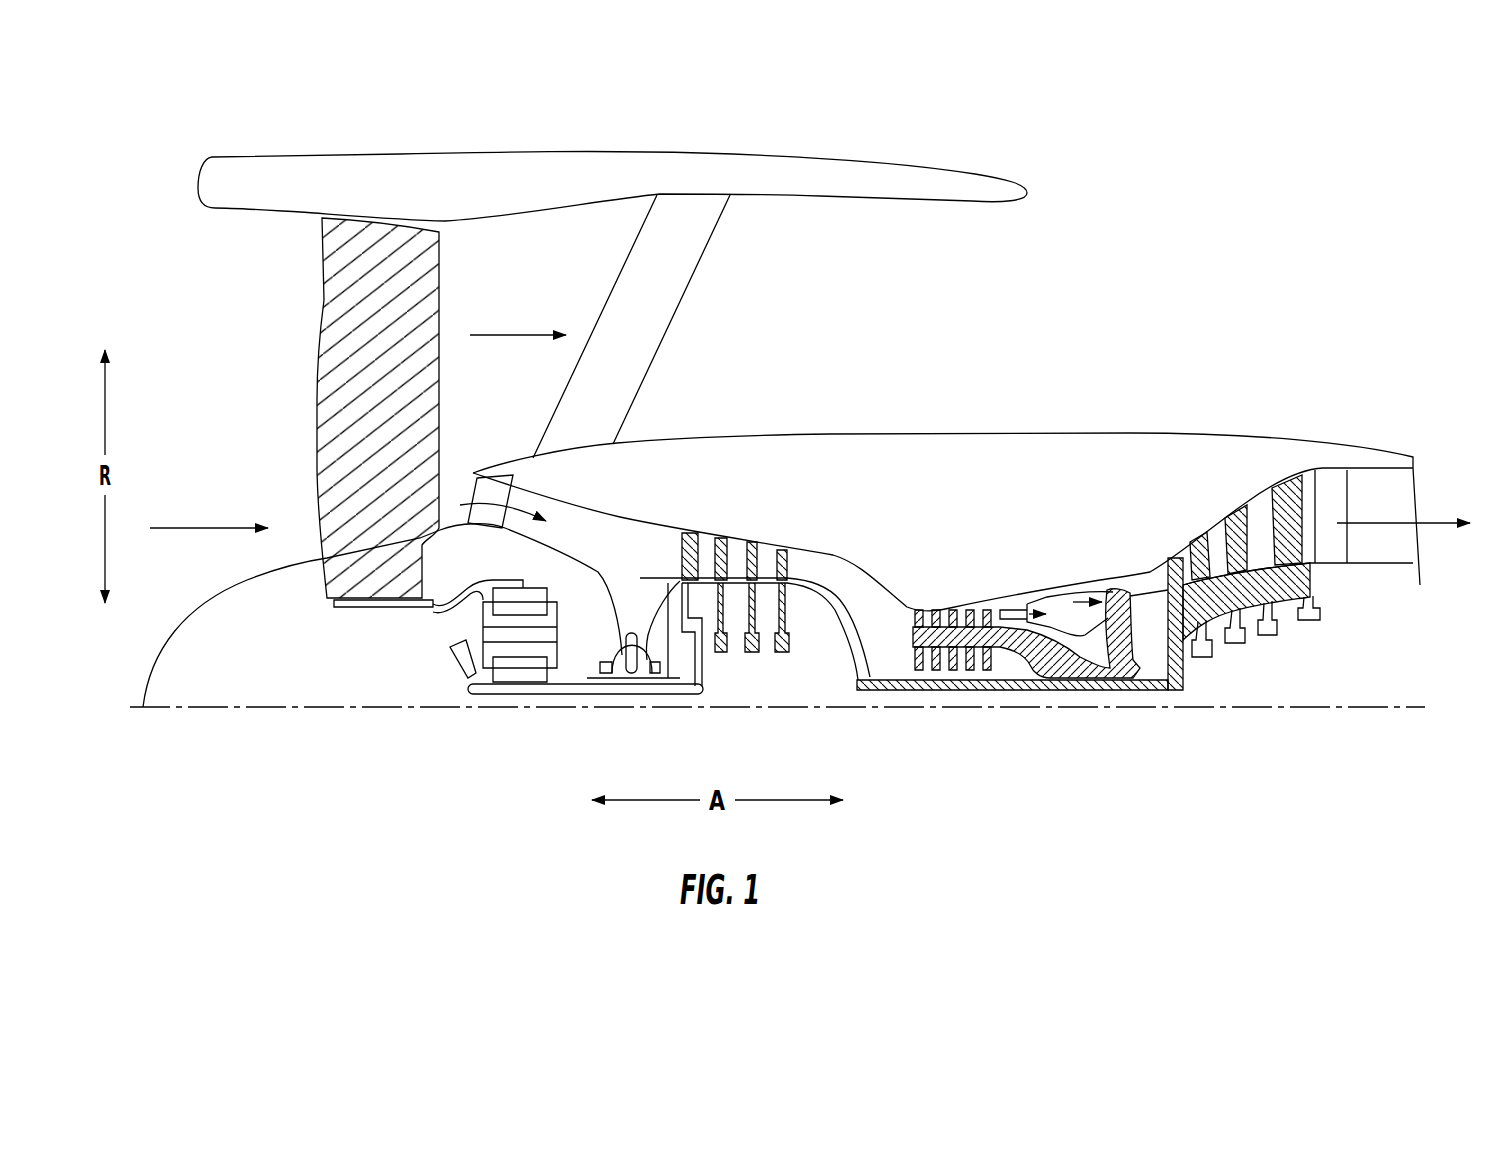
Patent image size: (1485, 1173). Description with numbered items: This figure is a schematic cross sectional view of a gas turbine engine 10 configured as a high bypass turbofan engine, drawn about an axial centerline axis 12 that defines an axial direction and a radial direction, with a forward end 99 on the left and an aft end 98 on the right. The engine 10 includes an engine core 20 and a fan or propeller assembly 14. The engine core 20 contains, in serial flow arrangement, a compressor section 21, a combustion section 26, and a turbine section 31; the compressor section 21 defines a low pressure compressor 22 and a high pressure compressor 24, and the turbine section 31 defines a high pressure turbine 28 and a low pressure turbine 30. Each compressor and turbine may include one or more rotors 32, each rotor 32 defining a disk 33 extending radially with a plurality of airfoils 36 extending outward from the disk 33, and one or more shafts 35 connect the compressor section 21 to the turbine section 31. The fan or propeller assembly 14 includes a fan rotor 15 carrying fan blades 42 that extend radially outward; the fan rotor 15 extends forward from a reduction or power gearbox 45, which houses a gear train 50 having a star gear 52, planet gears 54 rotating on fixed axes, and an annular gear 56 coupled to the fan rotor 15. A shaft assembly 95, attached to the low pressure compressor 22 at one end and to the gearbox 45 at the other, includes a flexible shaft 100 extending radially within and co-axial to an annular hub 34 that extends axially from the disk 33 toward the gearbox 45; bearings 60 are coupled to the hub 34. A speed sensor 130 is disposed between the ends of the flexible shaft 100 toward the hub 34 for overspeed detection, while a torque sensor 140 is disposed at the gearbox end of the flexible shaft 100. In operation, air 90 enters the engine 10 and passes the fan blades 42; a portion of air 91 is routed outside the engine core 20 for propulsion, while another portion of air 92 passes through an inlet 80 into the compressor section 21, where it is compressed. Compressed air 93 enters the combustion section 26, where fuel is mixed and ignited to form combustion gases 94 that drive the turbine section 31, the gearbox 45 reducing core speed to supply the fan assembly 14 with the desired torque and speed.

The gas turbine engine 10 is at (1148, 239).
The axial centerline axis 12 is at (268, 708).
The fan or propeller assembly 14 is at (382, 462).
The fan rotor 15 is at (433, 607).
The engine core 20 is at (877, 467).
The compressor section 21 is at (941, 529).
The low pressure compressor 22 is at (726, 587).
The high pressure compressor 24 is at (958, 602).
The combustion section 26 is at (1235, 557).
The high pressure turbine 28 is at (1114, 596).
The low pressure turbine 30 is at (1244, 563).
The turbine section 31 is at (1241, 485).
The rotor 32 is at (781, 652).
The disk 33 is at (724, 652).
The annular hub 34 is at (639, 685).
The shaft 35 is at (1108, 654).
The airfoils 36 is at (690, 534).
The fan or propeller blades 42 is at (330, 318).
The reduction or power gearbox 45 is at (548, 621).
The gear train 50 is at (508, 608).
The star gear 52 is at (537, 680).
The planet gears 54 is at (530, 592).
The annular gear 56 is at (512, 582).
The bearings 60 is at (612, 662).
The inlet 80 is at (465, 481).
The air 90 is at (177, 528).
The air 91 is at (505, 333).
The air 92 is at (510, 503).
The compressed air 93 is at (1022, 607).
The combustion gases 94 is at (1073, 600).
The shaft assembly 95 is at (437, 713).
The aft end 98 is at (1436, 648).
The forward end 99 is at (96, 648).
The flexible shaft 100 is at (584, 690).
The speed sensor 130 is at (639, 633).
The torque sensor 140 is at (457, 667).